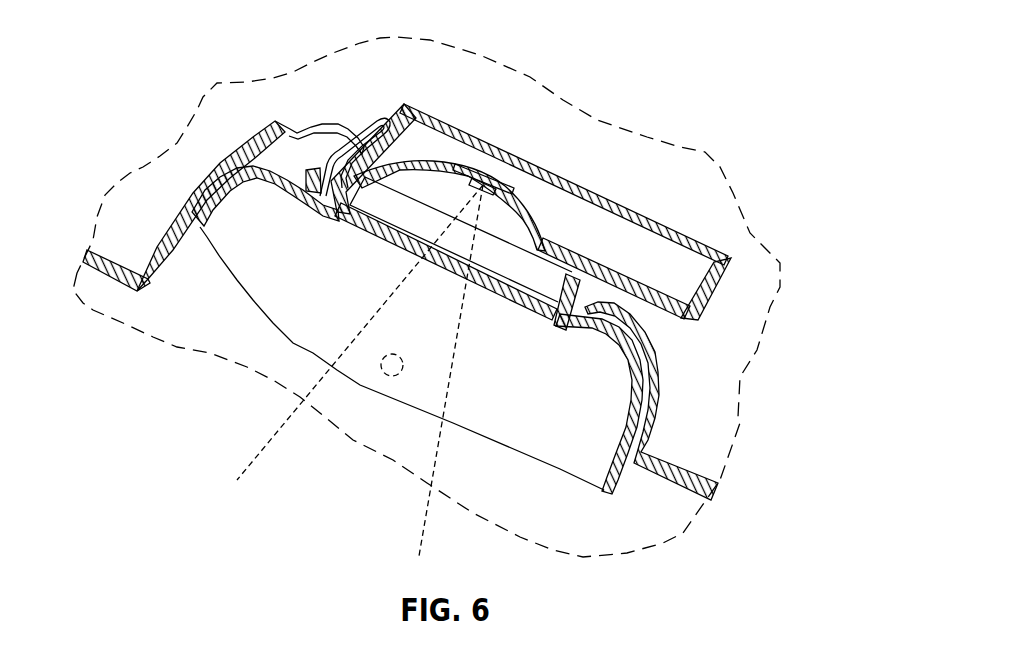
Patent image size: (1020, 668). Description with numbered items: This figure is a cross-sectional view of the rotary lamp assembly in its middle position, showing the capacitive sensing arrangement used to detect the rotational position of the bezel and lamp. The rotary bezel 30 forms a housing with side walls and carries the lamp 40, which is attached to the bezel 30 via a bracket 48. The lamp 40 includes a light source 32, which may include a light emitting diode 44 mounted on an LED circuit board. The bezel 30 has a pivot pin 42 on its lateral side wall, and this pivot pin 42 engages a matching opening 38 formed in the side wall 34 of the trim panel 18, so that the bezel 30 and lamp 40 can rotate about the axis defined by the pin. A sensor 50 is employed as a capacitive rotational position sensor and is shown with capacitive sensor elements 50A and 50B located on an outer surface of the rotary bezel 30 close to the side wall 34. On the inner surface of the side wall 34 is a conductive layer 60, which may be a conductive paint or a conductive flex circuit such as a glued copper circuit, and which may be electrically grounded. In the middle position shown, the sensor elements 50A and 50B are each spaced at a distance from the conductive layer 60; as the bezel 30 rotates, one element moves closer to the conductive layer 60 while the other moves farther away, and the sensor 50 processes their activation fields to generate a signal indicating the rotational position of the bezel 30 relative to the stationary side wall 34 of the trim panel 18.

The trim panel 18 is at (687, 487).
The rotary bezel 30 is at (623, 477).
The light source 32 is at (581, 176).
The side wall 34 is at (660, 410).
The opening 38 is at (383, 372).
The lamp 40 is at (386, 95).
The pivot pin 42 is at (398, 376).
The light emitting diode 44 is at (490, 187).
The bracket 48 is at (363, 118).
The sensor 50 is at (236, 318).
The capacitive sensor element 50A is at (197, 223).
The capacitive sensor element 50B is at (240, 180).
The conductive layer 60 is at (215, 247).